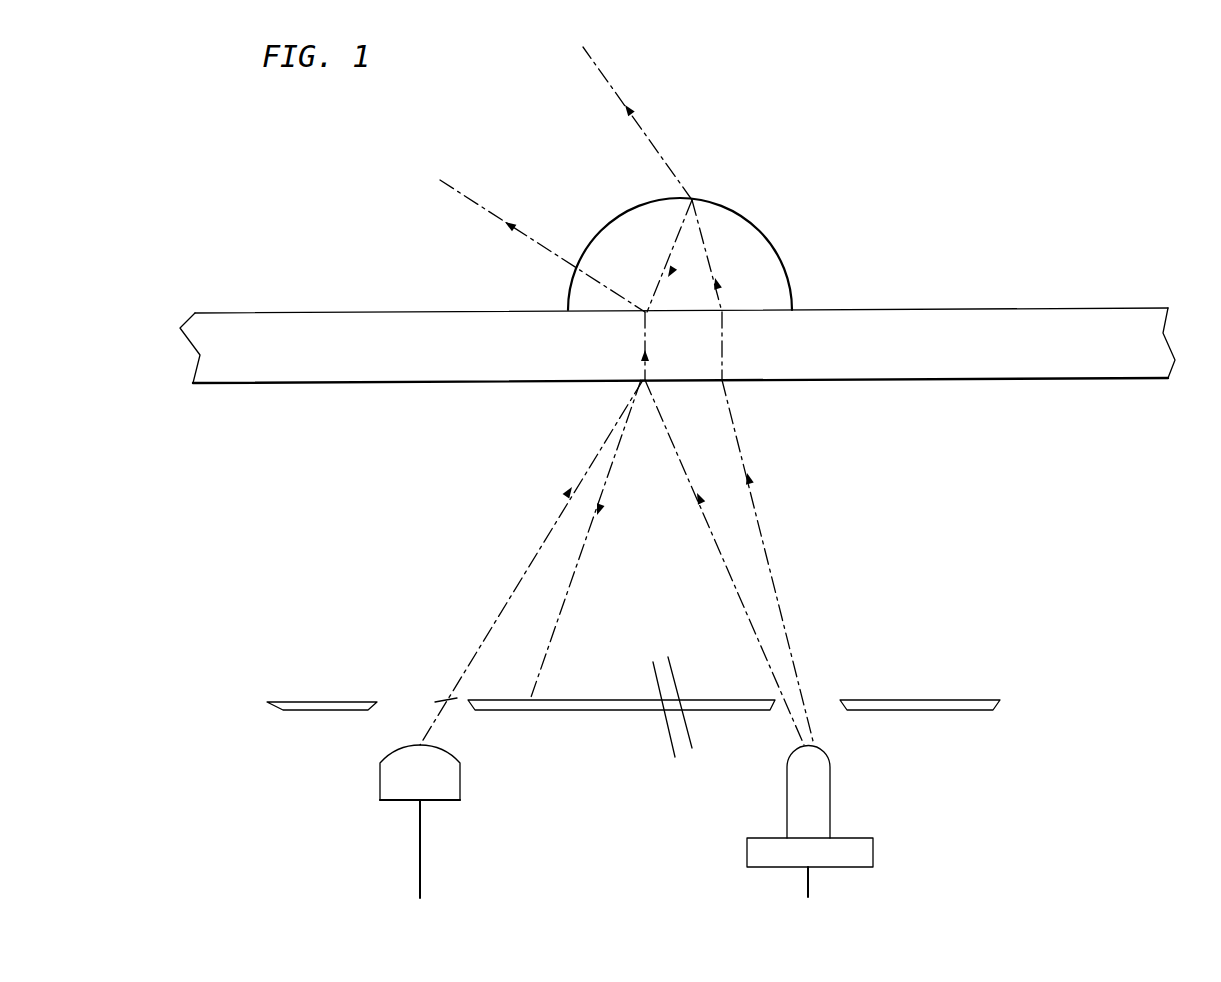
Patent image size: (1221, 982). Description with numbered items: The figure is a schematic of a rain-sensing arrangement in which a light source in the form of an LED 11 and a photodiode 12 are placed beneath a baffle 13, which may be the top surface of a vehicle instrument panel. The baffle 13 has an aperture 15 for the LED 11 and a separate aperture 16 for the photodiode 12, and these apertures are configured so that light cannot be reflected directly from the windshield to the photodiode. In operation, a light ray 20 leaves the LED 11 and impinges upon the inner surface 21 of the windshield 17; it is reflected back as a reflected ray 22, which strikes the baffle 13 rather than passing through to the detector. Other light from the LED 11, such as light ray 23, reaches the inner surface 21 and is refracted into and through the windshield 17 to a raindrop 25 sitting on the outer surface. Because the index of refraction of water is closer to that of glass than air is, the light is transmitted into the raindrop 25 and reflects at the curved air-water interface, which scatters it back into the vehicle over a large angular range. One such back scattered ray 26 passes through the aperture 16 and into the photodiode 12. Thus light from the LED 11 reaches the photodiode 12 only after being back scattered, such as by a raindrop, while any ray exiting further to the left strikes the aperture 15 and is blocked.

The LED 11 is at (873, 850).
The photodiode 12 is at (460, 773).
The baffle 13 is at (323, 702).
The aperture 15 is at (820, 700).
The aperture 16 is at (393, 705).
The windshield 17 is at (1168, 363).
The light ray 20 is at (725, 563).
The inner surface 21 is at (938, 382).
The reflected ray 22 is at (580, 570).
The light ray 23 is at (763, 540).
The raindrop 25 is at (787, 272).
The back scattered ray 26 is at (558, 508).